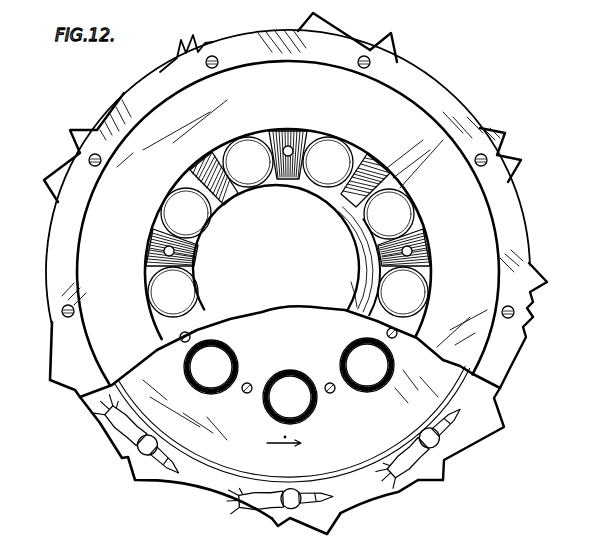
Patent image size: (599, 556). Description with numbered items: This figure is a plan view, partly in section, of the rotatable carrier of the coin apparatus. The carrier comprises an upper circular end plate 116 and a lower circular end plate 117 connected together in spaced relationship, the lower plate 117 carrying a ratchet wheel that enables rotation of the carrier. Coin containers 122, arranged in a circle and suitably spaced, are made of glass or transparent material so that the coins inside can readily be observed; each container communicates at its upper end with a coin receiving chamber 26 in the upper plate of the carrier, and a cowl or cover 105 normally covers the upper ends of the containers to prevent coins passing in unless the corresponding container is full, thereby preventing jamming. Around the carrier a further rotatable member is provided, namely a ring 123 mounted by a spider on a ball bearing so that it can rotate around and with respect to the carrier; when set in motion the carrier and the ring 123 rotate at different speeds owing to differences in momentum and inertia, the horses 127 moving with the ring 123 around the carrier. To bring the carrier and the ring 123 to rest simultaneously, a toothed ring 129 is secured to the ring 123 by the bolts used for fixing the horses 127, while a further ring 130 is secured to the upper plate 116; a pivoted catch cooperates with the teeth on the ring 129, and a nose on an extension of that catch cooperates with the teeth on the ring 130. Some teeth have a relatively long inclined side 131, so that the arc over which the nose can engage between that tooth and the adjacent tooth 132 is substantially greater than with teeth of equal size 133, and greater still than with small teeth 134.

The coin receiving chamber 26 is at (283, 168).
The cowl or cover 105 is at (286, 250).
The upper circular end plate 116 is at (302, 218).
The lower circular end plate 117 is at (290, 394).
The coin containers 122 is at (343, 351).
The ring 123 is at (370, 507).
The horses 127 is at (133, 433).
The toothed ring 129 is at (193, 483).
The ring 130 is at (64, 237).
The long inclined side 131 is at (328, 24).
The adjacent tooth 132 is at (392, 41).
The teeth of equal size 133 is at (510, 163).
The small teeth 134 is at (178, 40).